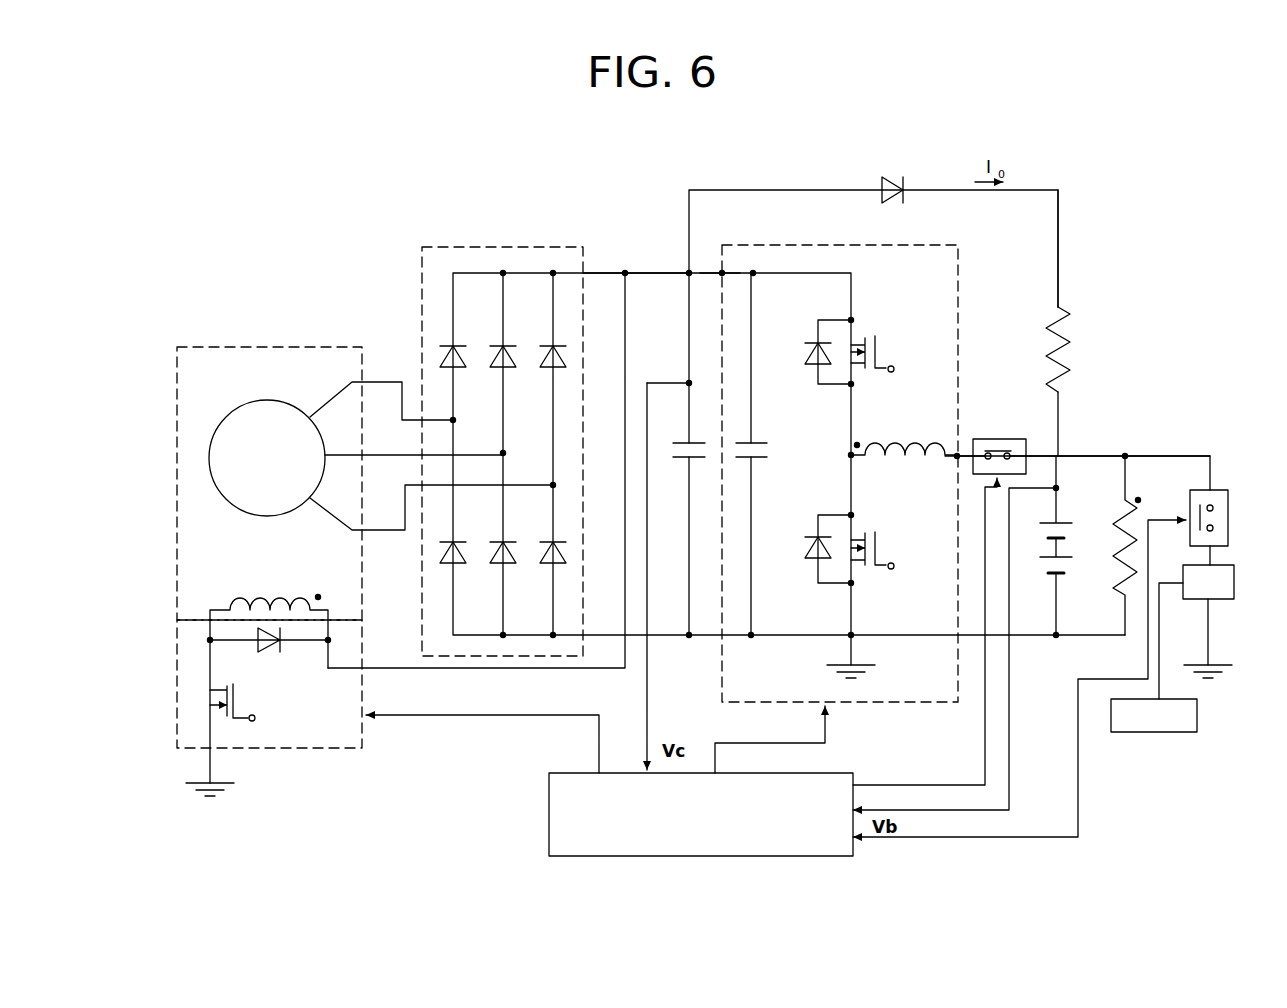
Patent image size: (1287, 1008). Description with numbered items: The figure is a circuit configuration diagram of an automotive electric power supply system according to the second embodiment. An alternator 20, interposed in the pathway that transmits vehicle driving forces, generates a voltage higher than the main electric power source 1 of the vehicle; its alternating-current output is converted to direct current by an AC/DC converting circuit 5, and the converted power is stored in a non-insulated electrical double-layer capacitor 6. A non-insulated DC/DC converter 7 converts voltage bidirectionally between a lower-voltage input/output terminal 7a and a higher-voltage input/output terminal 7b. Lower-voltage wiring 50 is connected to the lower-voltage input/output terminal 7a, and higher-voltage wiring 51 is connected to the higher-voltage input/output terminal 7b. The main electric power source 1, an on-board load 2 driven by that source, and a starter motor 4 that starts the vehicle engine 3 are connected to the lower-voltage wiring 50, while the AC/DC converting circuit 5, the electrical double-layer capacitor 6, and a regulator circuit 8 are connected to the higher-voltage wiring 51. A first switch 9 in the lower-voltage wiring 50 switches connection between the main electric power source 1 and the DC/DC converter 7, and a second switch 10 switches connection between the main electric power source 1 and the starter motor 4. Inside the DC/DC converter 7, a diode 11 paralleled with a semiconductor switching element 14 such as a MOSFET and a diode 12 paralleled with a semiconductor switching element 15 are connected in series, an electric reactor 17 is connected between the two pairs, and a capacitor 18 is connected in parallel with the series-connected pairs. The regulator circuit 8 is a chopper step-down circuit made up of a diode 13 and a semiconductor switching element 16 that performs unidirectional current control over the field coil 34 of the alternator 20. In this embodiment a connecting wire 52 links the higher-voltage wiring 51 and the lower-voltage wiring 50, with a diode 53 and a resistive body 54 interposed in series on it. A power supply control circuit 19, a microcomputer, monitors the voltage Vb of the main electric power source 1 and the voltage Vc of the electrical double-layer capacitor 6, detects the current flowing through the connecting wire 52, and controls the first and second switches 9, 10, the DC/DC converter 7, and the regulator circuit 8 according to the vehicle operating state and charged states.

The main electric power source 1 is at (1070, 510).
The on-board load 2 is at (1110, 568).
The vehicle engine 3 is at (1203, 717).
The starter motor 4 is at (1235, 600).
The AC/DC converting circuit 5 is at (420, 258).
The electrical double-layer capacitor 6 is at (672, 470).
The DC/DC converter 7 is at (965, 258).
The lower-voltage input/output terminal 7a is at (975, 420).
The higher-voltage input/output terminal 7b is at (720, 270).
The regulator circuit 8 is at (298, 752).
The first switch 9 is at (1007, 436).
The second switch 10 is at (1232, 480).
The diode 11 is at (805, 340).
The diode 12 is at (800, 530).
The diode 13 is at (290, 655).
The semiconductor switching element 14 is at (898, 335).
The semiconductor switching element 15 is at (900, 520).
The semiconductor switching element 16 is at (260, 705).
The electric reactor 17 is at (922, 425).
The capacitor 18 is at (780, 435).
The power supply control circuit 19 is at (540, 812).
The alternator 20 is at (252, 345).
The field coil 34 is at (248, 588).
The lower-voltage wiring 50 is at (1120, 425).
The higher-voltage wiring 51 is at (640, 272).
The connecting wire 52 is at (1070, 248).
The diode 53 is at (875, 182).
The resistive body 54 is at (1078, 342).